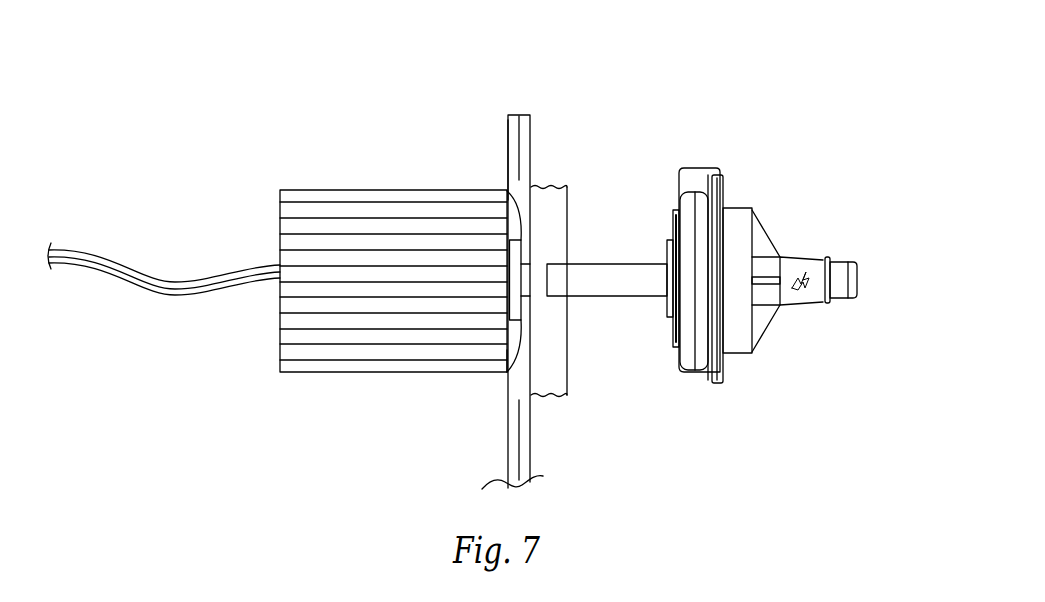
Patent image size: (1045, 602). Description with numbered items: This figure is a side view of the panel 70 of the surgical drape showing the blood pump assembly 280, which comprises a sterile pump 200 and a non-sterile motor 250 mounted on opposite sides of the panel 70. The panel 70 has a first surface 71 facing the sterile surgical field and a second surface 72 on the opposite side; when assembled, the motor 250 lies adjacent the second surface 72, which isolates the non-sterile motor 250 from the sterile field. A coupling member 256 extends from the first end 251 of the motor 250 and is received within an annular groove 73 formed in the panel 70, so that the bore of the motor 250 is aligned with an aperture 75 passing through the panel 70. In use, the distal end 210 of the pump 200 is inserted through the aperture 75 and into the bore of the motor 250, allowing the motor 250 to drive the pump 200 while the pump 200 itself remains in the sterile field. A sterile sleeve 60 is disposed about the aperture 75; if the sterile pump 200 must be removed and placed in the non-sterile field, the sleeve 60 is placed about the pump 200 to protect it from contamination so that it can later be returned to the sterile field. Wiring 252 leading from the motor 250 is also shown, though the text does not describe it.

The sterile sleeve 60 is at (567, 185).
The panel 70 is at (527, 128).
The first surface 71 is at (528, 450).
The second surface 72 is at (508, 155).
The annular groove 73 is at (507, 192).
The aperture 75 is at (531, 263).
The pump 200 is at (804, 232).
The distal end 210 is at (547, 297).
The motor 250 is at (332, 182).
The first end 251 is at (505, 360).
The electrical wires 252 is at (280, 371).
The coupling member 256 is at (508, 358).
The blood pump assembly 280 is at (532, 100).